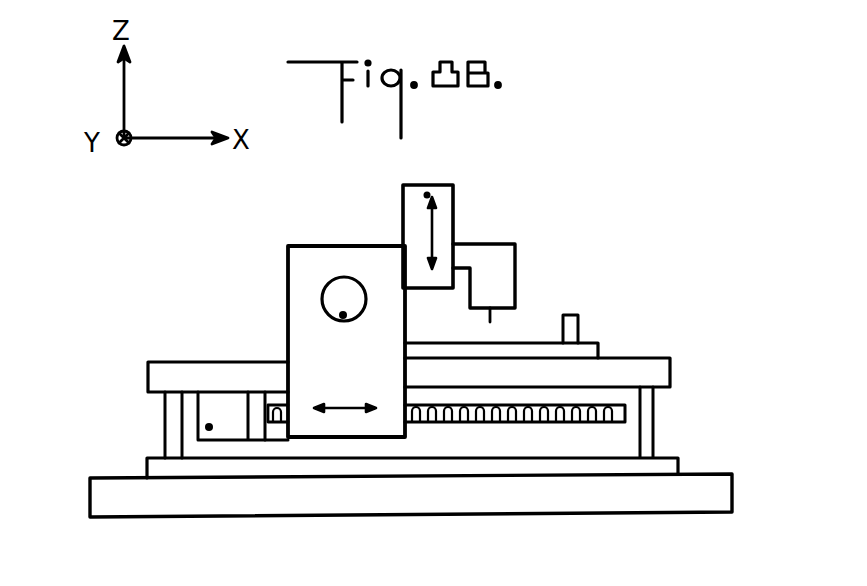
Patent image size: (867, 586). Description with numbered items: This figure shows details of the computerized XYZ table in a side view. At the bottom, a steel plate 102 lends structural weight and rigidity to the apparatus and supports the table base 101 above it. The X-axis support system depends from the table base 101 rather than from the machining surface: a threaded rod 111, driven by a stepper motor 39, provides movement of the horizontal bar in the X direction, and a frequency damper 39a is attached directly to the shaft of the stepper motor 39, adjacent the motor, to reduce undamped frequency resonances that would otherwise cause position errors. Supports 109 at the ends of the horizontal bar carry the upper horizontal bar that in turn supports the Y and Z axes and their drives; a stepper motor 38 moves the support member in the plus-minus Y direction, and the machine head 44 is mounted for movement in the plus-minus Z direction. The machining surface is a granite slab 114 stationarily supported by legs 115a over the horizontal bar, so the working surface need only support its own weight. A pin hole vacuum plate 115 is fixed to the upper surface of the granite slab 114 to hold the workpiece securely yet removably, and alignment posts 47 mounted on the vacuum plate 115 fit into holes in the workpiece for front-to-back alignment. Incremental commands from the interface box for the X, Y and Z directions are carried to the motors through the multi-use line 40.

The support 109 is at (300, 260).
The line 40 is at (427, 195).
The machine head 44 is at (515, 263).
The stepper motor 38 is at (344, 323).
The pin hole vacuum plate 115 is at (598, 345).
The alignment post 47 is at (578, 317).
The granite slab 114 is at (657, 373).
The leg 115a is at (165, 405).
The stepper motor 39 is at (233, 440).
The frequency damper 39a is at (257, 432).
The threaded rod 111 is at (452, 422).
The table base 101 is at (678, 460).
The steel plate 102 is at (722, 500).